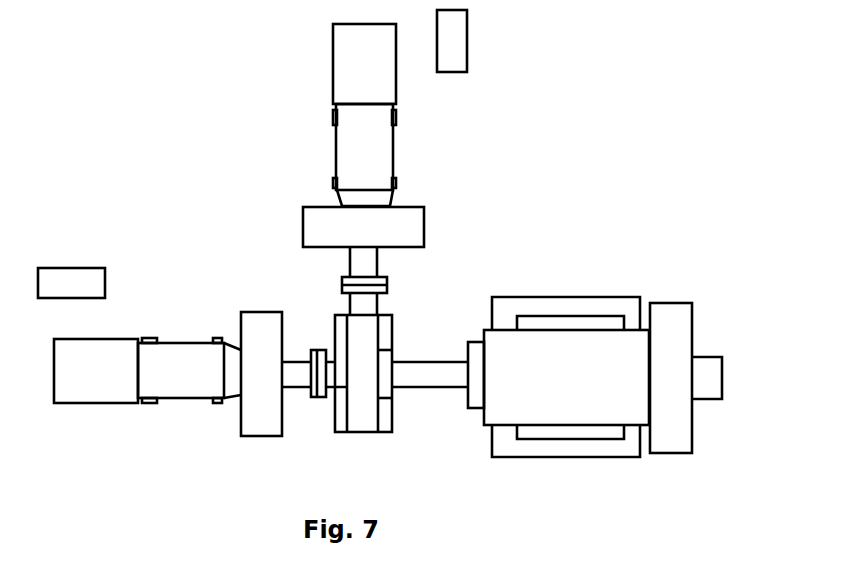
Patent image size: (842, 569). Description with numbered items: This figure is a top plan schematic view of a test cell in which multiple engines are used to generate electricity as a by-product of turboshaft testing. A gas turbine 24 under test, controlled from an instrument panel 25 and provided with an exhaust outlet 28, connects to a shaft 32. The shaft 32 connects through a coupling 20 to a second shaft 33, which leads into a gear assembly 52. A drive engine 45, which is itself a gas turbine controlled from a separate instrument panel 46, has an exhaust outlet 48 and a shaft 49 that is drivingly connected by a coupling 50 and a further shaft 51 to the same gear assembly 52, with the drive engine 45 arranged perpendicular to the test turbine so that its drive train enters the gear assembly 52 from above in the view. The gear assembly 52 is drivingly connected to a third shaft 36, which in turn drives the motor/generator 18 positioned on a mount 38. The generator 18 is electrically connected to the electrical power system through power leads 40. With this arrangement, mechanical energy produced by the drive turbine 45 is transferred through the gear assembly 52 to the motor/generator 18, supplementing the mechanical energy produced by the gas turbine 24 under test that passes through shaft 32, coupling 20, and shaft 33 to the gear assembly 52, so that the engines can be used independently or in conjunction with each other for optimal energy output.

The generator 18 is at (583, 386).
The coupling 20 is at (316, 350).
The gas turbine 24 is at (103, 397).
The instrument panel 25 is at (62, 273).
The exhaust outlet 28 is at (267, 313).
The shaft 32 is at (295, 380).
The second shaft 33 is at (340, 382).
The third shaft 36 is at (433, 388).
The mount 38 is at (562, 458).
The power leads 40 is at (705, 357).
The drive engine 45 is at (333, 88).
The instrument panel 46 is at (467, 33).
The exhaust outlet 48 is at (424, 227).
The shaft 49 is at (377, 256).
The coupling 50 is at (387, 285).
The shaft 51 is at (377, 305).
The gear assembly 52 is at (362, 432).